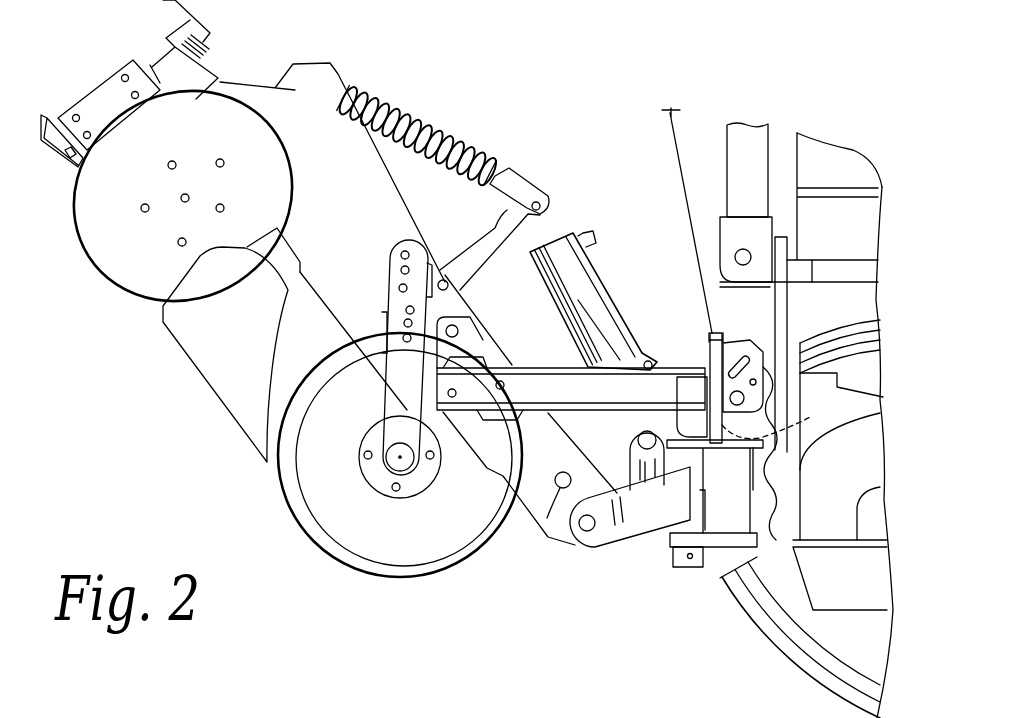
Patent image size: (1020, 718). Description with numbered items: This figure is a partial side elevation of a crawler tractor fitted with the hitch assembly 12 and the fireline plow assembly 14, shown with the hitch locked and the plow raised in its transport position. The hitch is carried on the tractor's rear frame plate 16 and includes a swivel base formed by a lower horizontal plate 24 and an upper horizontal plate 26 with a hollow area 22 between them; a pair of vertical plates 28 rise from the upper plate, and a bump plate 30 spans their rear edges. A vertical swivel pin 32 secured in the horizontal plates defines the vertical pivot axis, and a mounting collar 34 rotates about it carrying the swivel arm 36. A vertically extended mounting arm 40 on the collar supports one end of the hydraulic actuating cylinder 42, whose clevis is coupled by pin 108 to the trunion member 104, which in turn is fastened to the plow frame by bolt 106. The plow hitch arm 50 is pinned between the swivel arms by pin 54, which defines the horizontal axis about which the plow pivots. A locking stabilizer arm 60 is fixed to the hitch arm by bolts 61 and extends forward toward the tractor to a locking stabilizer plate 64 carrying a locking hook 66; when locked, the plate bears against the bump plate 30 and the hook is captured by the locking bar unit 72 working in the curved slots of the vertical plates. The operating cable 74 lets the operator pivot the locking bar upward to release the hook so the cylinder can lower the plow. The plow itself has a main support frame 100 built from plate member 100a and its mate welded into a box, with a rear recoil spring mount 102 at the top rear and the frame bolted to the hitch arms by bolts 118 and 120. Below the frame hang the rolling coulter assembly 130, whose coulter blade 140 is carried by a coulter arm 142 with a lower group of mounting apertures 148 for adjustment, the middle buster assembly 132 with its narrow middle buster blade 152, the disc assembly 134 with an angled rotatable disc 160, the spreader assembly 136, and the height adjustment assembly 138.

The hitch assembly 12 is at (604, 600).
The fireline plow assembly 14 is at (418, 78).
The rear frame plate 16 is at (782, 251).
The hollow area 22 is at (737, 515).
The lower horizontal plate 24 is at (735, 548).
The upper horizontal plate 26 is at (752, 470).
The vertical plates 28 is at (743, 426).
The bump plate 30 is at (717, 333).
The swivel pin 32 is at (680, 562).
The mounting collar 34 is at (670, 535).
The swivel arm 36 is at (630, 507).
The mounting arm 40 is at (633, 467).
The actuating cylinder 42 is at (593, 300).
The plow hitch arm 50 is at (530, 410).
The pin 54 is at (588, 531).
The locking stabilizer arm 60 is at (571, 388).
The bolts 61 is at (501, 380).
The locking stabilizer plate 64 is at (711, 340).
The locking hook 66 is at (692, 397).
The locking bar unit 72 is at (722, 403).
The operating cable 74 is at (670, 133).
The main support frame 100 is at (348, 330).
The plate member 100a is at (332, 172).
The rear recoil spring mount 102 is at (303, 62).
The trunion member 104 is at (487, 262).
The bolt 106 is at (445, 280).
The pin 108 is at (539, 200).
The bolt 118 is at (563, 537).
The bolt 120 is at (452, 324).
The rolling coulter assembly 130 is at (358, 573).
The middle buster assembly 132 is at (193, 392).
The disc assembly 134 is at (72, 244).
The spreader assembly 136 is at (86, 88).
The height adjustment assembly 138 is at (60, 170).
The rolling coulter blade 140 is at (398, 270).
The coulter arm 142 is at (397, 393).
The lower group of mounting apertures 148 is at (400, 322).
The middle buster blade 152 is at (225, 354).
The rotatable disc 160 is at (183, 195).